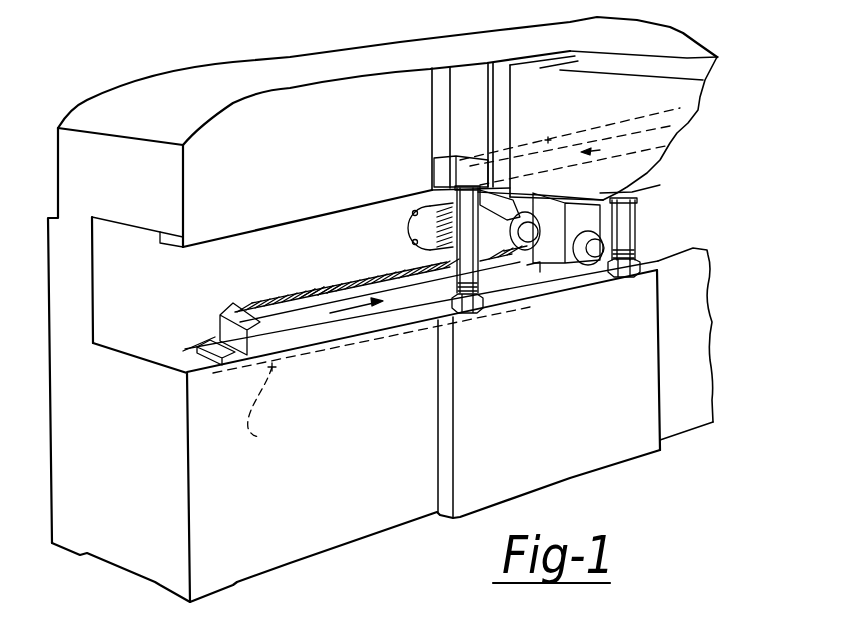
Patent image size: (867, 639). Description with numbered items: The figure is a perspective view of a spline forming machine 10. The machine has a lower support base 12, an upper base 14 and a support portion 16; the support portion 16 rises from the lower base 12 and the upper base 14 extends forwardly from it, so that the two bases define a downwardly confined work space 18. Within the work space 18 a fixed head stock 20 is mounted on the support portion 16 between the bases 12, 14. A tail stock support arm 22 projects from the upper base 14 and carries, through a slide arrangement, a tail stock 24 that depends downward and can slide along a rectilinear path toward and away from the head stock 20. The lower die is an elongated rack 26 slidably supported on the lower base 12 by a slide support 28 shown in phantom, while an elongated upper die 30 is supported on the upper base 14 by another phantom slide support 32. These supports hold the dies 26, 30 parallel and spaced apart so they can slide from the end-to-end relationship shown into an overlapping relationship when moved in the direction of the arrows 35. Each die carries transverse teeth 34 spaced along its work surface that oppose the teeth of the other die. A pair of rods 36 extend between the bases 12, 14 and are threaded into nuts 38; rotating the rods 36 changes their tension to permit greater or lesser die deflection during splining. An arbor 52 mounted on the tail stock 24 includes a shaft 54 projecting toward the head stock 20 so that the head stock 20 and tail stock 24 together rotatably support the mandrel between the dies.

The spline forming machine 10 is at (197, 50).
The lower support base 12 is at (128, 553).
The upper base 14 is at (117, 113).
The support portion 16 is at (72, 272).
The work space 18 is at (272, 258).
The fixed head stock 20 is at (407, 233).
The tail stock support arm 22 is at (683, 60).
The tail stock 24 is at (633, 190).
The elongated rack 26 is at (308, 315).
The slide support 28 is at (371, 377).
The elongated upper die 30 is at (540, 197).
The slide support 32 is at (550, 140).
The teeth 34 is at (320, 293).
The arrows 35 is at (360, 313).
The rods 36 is at (472, 278).
The nuts 38 is at (473, 308).
The arbor 52 is at (520, 230).
The shaft 54 is at (592, 253).